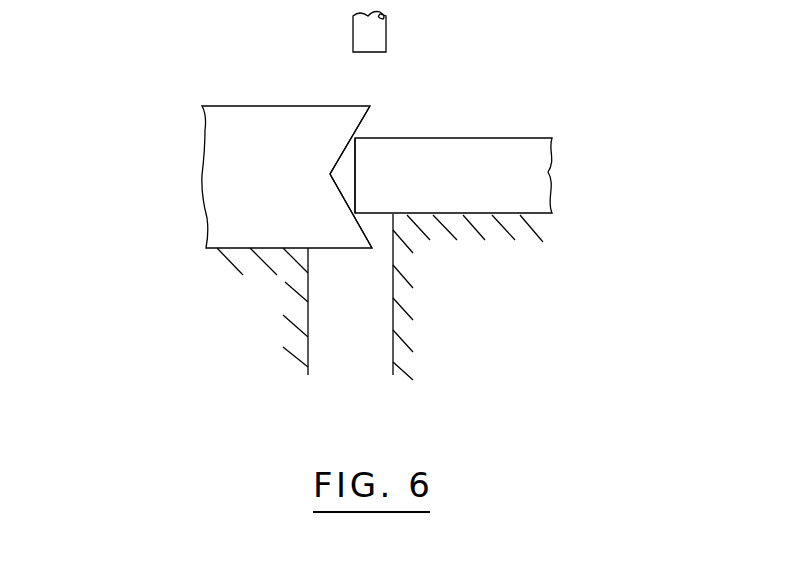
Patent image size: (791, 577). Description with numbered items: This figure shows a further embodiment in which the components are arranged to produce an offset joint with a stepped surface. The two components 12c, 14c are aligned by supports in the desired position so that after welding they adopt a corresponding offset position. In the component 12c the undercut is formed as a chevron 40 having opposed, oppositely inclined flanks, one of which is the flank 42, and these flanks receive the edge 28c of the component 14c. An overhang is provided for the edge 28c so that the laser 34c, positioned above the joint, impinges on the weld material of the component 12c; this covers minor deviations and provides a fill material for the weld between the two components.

The component 12c is at (230, 134).
The component 14c is at (538, 167).
The edge 28c is at (355, 172).
The laser 34c is at (376, 35).
The chevron 40 is at (306, 157).
The flank 42 is at (352, 119).